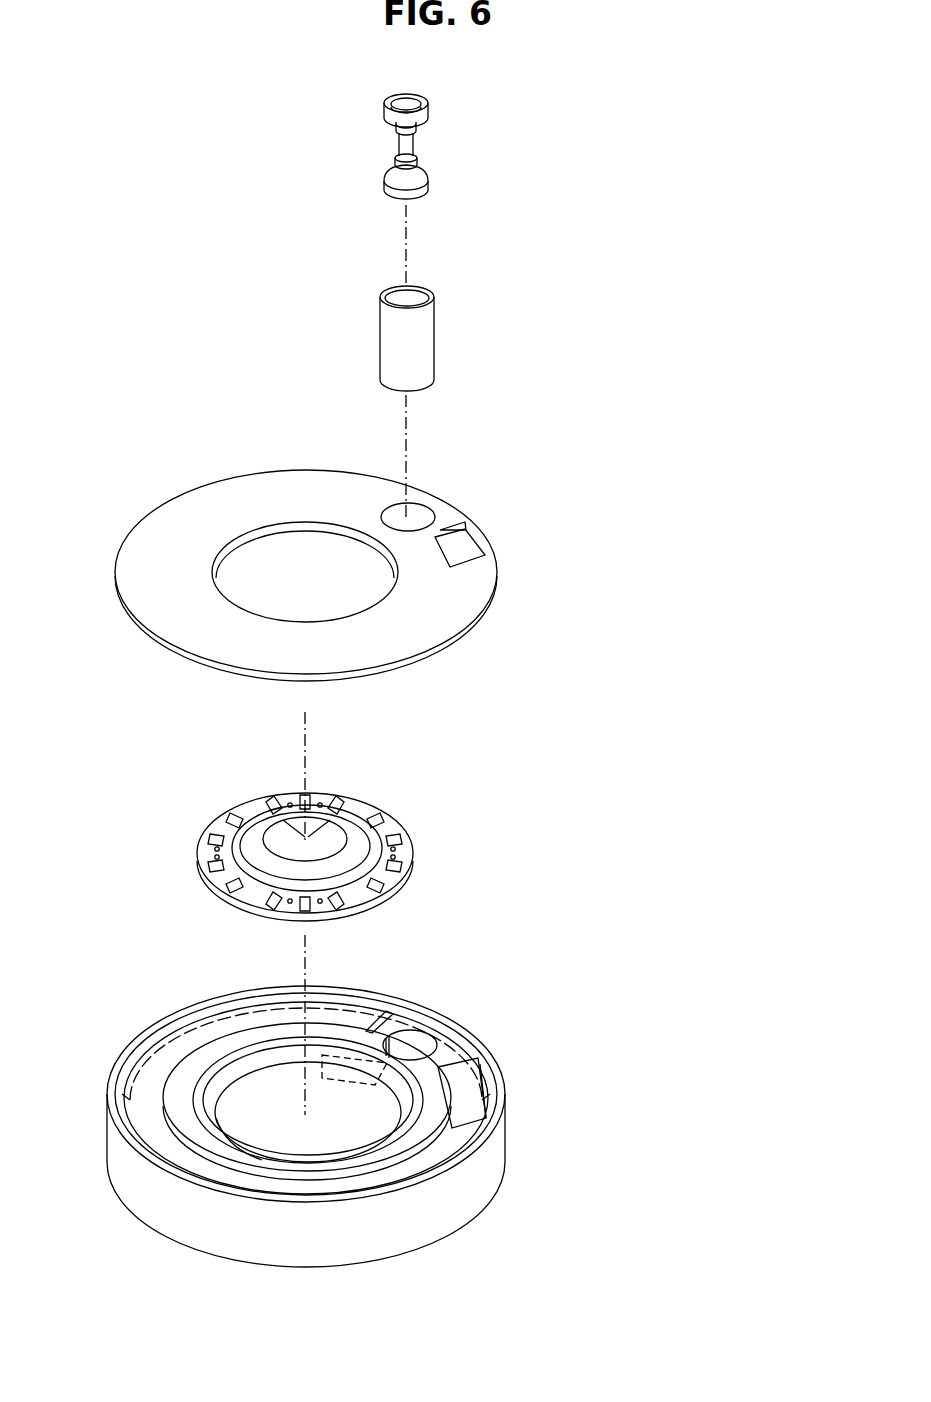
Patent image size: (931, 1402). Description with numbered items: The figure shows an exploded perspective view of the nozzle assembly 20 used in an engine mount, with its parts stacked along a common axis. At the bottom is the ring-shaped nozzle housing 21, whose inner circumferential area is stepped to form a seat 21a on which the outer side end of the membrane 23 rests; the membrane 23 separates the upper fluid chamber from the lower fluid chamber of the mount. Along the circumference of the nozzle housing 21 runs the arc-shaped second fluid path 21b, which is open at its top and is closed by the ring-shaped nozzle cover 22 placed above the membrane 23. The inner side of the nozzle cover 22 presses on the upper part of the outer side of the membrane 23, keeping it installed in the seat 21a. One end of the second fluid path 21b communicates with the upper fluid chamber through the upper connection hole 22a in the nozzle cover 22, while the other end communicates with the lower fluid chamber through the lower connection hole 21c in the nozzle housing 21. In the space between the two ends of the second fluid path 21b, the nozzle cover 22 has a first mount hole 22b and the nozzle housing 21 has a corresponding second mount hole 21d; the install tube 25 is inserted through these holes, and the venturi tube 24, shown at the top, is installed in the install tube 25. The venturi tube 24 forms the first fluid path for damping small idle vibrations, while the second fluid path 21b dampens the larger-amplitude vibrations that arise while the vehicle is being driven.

The nozzle assembly 20 is at (698, 757).
The nozzle housing 21 is at (349, 1109).
The seat 21a is at (235, 1076).
The second fluid path 21b is at (156, 1111).
The lower connection hole 21c is at (338, 1066).
The second mount hole 21d is at (405, 1046).
The nozzle cover 22 is at (338, 568).
The upper connection hole 22a is at (463, 546).
The first mount hole 22b is at (410, 516).
The membrane 23 is at (413, 862).
The venturi tube 24 is at (455, 137).
The install tube 25 is at (455, 322).